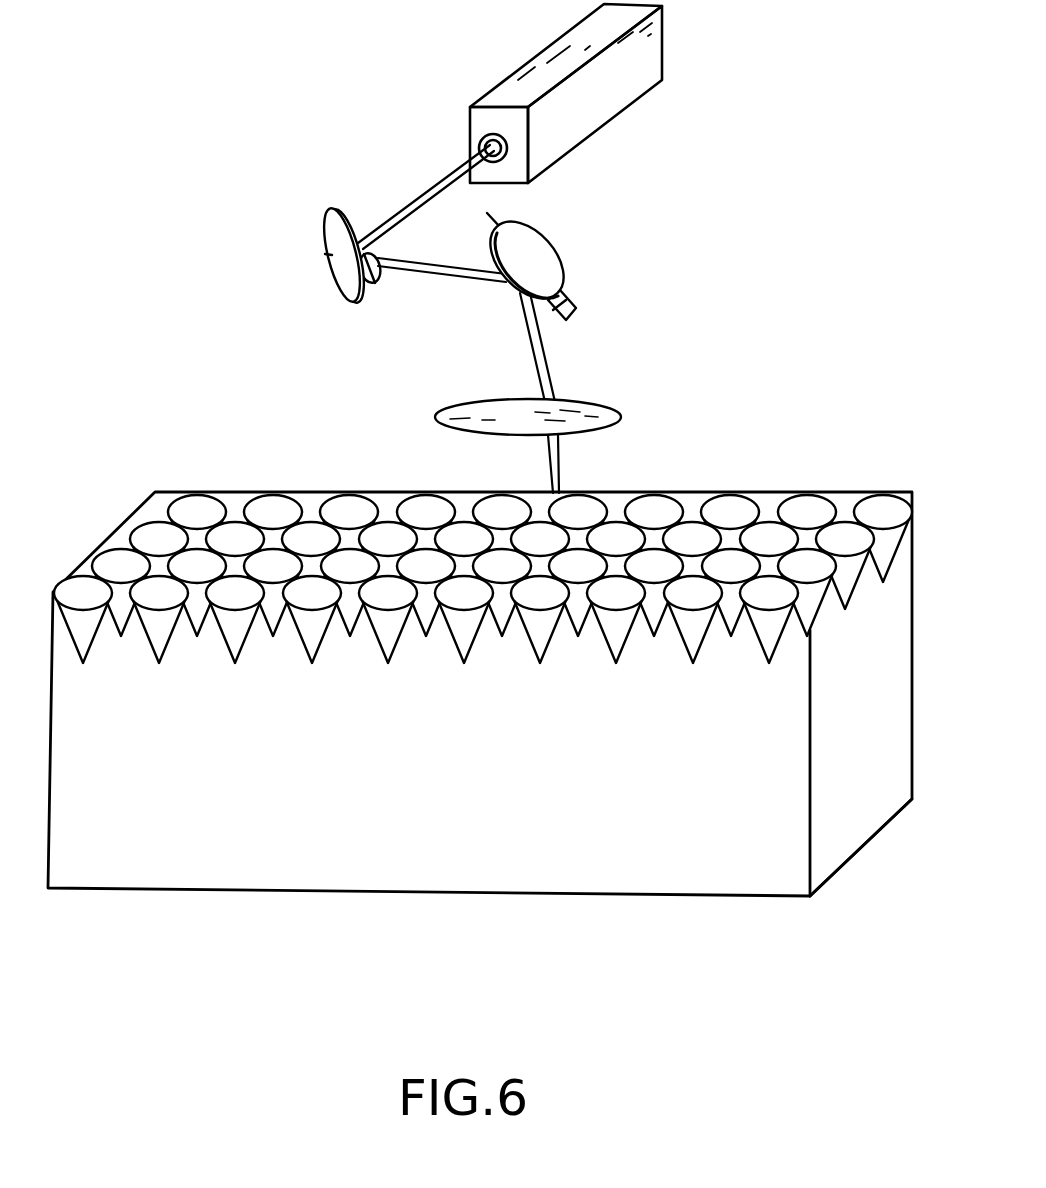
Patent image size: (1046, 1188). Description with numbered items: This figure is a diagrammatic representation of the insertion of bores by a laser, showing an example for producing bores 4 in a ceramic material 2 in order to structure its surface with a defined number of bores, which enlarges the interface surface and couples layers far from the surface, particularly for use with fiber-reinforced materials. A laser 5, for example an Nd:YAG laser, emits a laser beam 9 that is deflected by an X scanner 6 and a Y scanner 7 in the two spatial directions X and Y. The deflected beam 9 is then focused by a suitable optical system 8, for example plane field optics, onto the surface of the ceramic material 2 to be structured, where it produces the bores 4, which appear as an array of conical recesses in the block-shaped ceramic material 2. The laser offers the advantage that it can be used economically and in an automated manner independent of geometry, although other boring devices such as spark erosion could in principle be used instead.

The ceramic material 2 is at (672, 857).
The bores 4 is at (665, 682).
The laser 5 is at (690, 48).
The X scanner 6 is at (338, 270).
The Y scanner 7 is at (528, 254).
The optical system 8 is at (481, 420).
The laser beam 9 is at (433, 190).